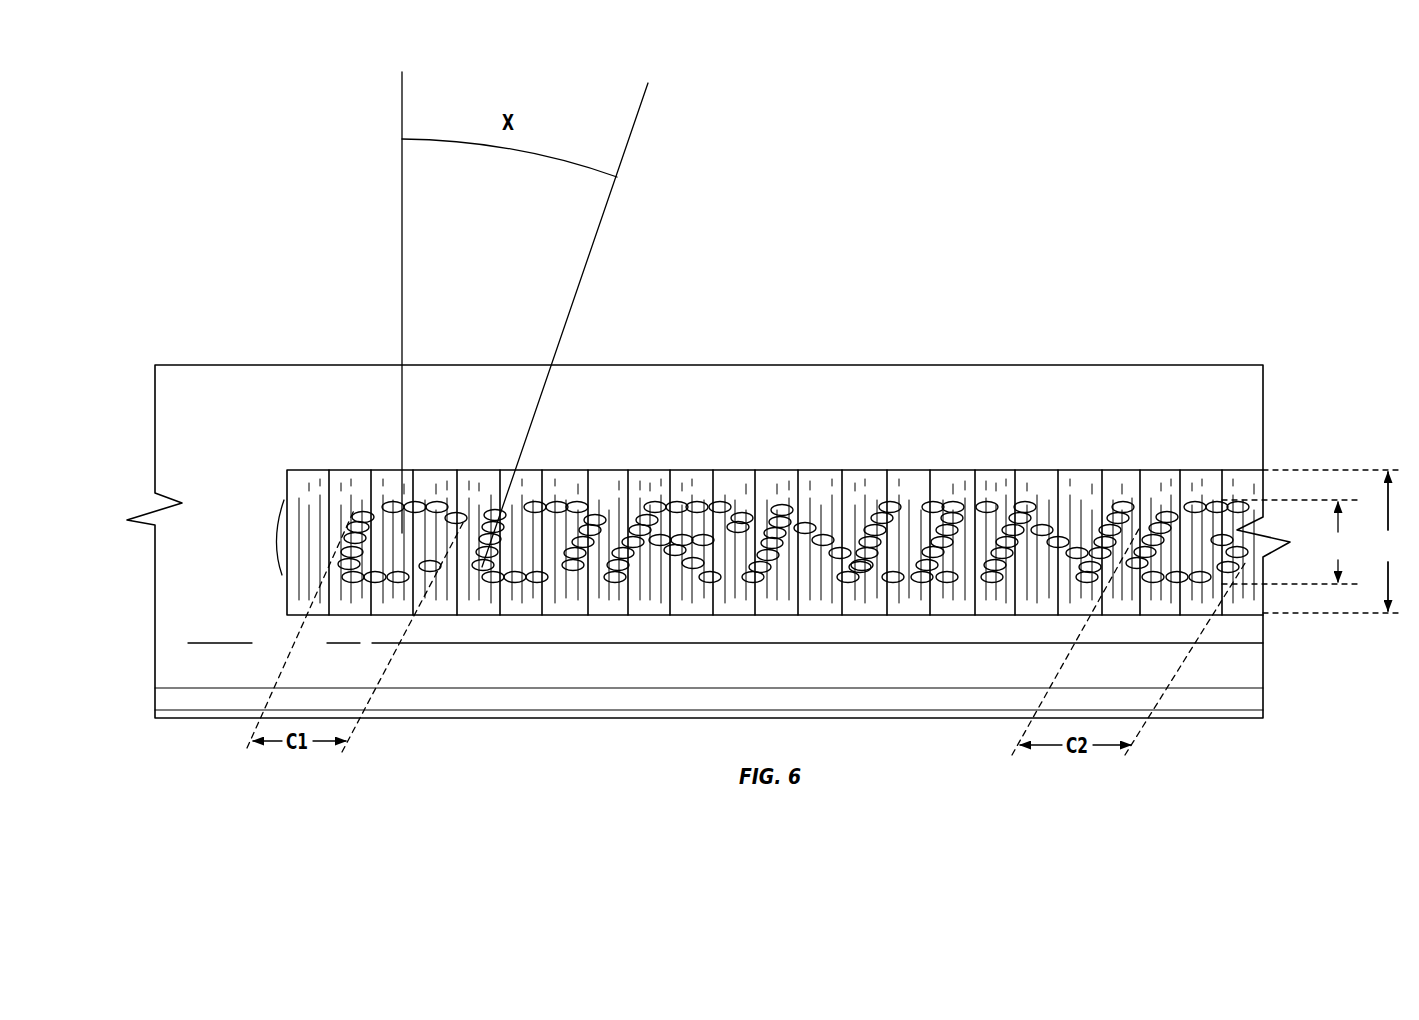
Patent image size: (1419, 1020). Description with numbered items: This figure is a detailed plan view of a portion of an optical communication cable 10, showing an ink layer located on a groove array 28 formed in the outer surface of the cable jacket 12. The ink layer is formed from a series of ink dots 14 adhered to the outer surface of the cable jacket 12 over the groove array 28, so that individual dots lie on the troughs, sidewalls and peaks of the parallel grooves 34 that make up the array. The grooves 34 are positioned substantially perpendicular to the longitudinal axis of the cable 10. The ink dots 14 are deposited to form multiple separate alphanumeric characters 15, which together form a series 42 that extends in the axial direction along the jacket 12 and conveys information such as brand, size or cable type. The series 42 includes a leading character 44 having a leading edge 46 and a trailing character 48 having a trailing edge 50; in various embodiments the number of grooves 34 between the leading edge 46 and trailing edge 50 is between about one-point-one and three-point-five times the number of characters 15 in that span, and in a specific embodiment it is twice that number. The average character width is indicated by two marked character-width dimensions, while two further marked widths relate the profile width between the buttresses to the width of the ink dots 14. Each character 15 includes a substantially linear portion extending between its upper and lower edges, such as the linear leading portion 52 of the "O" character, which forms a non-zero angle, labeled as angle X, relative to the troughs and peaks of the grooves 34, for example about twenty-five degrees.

The cable 10 is at (866, 242).
The cable jacket 12 is at (937, 383).
The ink dots 14 is at (675, 507).
The alphanumeric characters 15 is at (378, 586).
The groove array 28 is at (312, 522).
The grooves 34 is at (350, 473).
The series of alphanumeric characters 42 is at (1203, 593).
The leading character 44 is at (387, 490).
The leading edge 46 is at (342, 540).
The trailing character 48 is at (1200, 483).
The trailing edge 50 is at (1237, 567).
The linear leading portion 52 is at (490, 520).